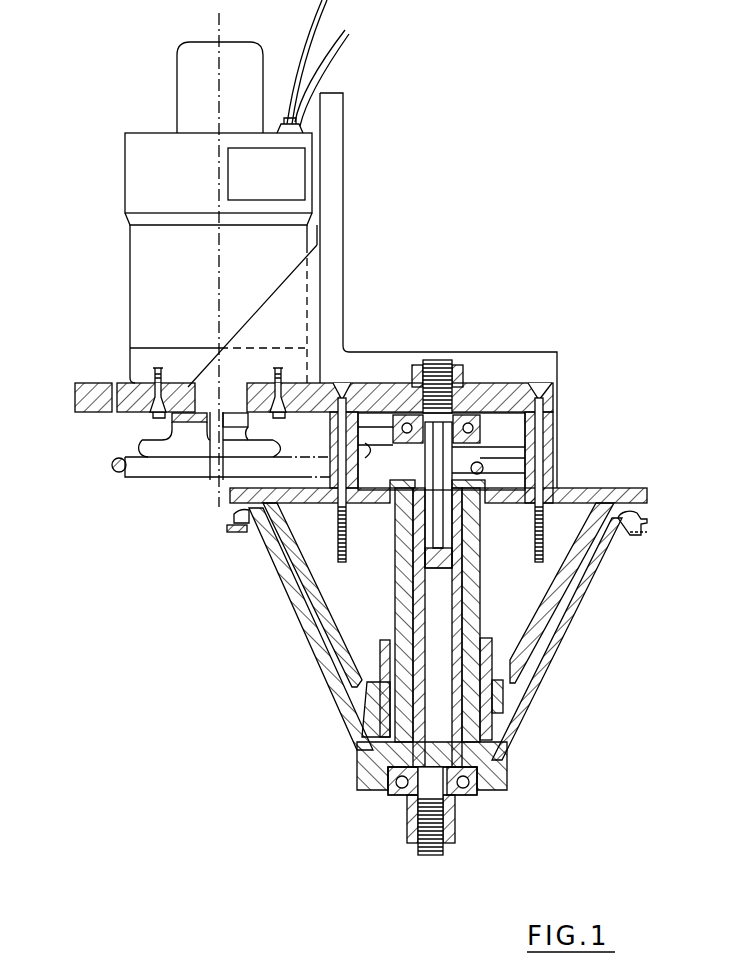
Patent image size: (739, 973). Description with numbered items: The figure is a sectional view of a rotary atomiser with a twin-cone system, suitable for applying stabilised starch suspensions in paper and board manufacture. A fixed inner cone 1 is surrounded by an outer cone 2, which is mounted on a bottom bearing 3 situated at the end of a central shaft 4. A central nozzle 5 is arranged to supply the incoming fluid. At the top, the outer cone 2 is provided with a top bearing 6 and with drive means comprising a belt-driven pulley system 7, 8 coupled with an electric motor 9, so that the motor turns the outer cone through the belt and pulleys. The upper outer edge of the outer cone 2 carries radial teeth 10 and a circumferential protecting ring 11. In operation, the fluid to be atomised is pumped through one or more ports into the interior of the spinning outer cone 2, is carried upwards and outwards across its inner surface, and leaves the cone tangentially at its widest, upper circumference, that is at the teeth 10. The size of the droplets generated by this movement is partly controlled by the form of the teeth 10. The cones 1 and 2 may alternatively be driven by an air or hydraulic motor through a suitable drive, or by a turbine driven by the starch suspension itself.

The inner cone 1 is at (548, 613).
The outer cone 2 is at (548, 660).
The bottom bearing 3 is at (473, 778).
The central shaft 4 is at (433, 605).
The central nozzle 5 is at (428, 558).
The top bearing 6 is at (473, 412).
The belt-driven pulley system 7 is at (487, 453).
The belt-driven pulley system 8 is at (143, 445).
The electric motor 9 is at (147, 297).
The radial teeth 10 is at (238, 513).
The circumferential protecting ring 11 is at (232, 530).